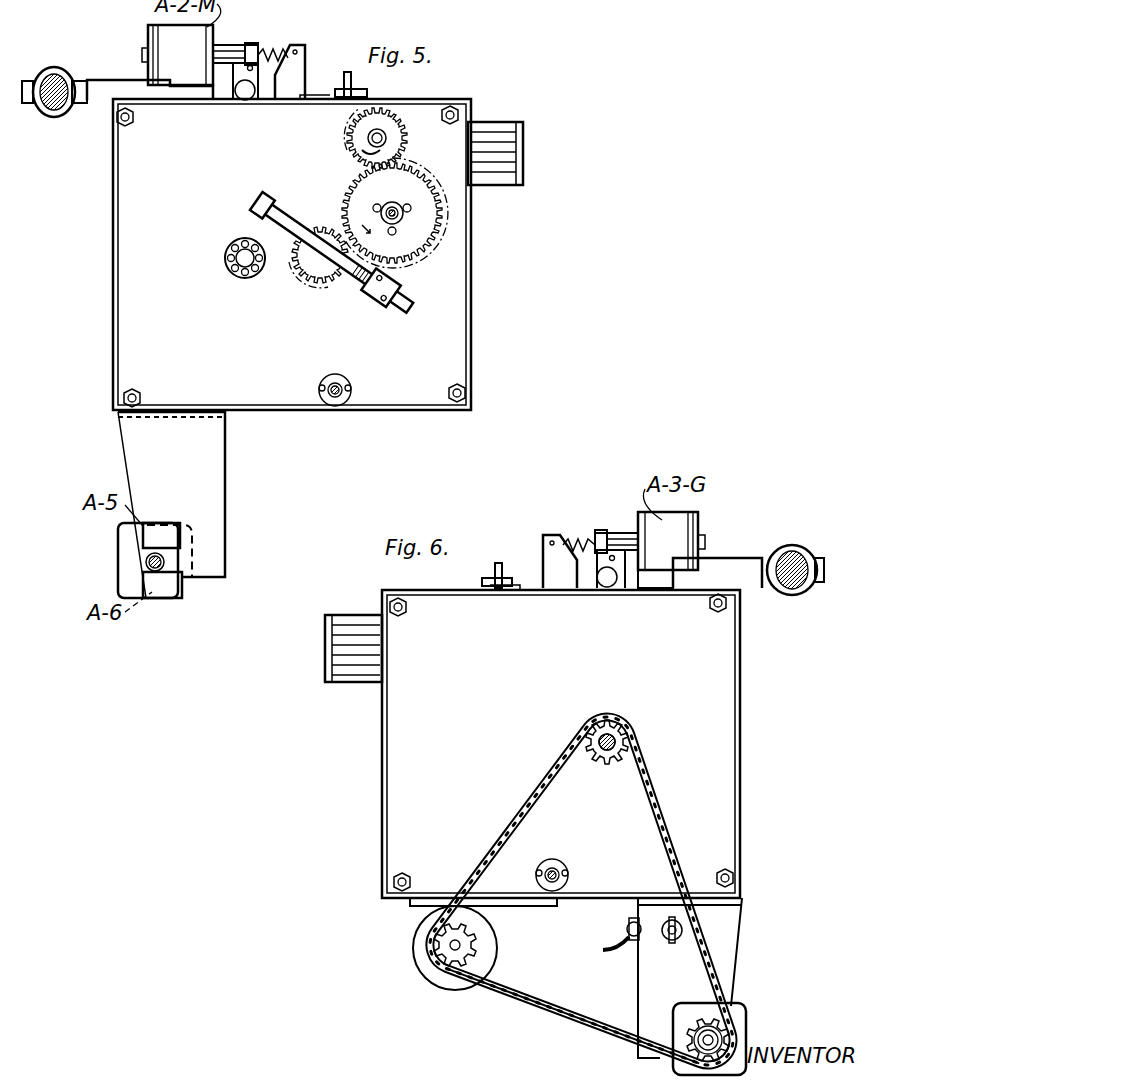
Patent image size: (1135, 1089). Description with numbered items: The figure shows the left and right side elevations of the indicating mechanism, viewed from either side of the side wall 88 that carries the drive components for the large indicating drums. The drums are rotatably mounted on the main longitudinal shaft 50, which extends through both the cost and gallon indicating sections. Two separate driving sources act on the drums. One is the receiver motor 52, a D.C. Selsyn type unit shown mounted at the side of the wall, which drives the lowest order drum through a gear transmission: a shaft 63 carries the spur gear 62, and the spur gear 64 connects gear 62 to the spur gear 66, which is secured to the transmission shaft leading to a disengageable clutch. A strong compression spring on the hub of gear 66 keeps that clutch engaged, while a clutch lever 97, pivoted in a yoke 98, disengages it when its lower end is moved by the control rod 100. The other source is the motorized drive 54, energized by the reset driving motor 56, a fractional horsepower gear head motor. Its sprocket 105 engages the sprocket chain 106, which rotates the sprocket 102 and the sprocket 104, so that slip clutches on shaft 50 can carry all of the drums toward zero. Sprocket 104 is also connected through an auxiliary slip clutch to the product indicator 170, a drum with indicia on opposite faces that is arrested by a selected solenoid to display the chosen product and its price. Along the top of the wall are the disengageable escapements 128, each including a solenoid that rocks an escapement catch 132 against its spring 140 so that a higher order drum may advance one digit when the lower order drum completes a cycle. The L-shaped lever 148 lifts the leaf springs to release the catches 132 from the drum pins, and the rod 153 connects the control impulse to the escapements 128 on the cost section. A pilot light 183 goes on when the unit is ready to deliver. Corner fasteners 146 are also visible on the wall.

In FIG. 5, the main longitudinal shaft 50 is at (243, 276).
In FIG. 6, the main longitudinal shaft 50 is at (617, 740).
In FIG. 5, the receiver motor 52 is at (487, 148).
In FIG. 6, the receiver motor 52 is at (352, 664).
In FIG. 6, the motorized drive 54 is at (654, 773).
In FIG. 6, the reset driving motor 56 is at (445, 982).
In FIG. 5, the spur gear 62 is at (403, 152).
In FIG. 5, the shaft 63 is at (368, 140).
In FIG. 5, the spur gear 64 is at (410, 243).
In FIG. 5, the spur gear 66 is at (320, 284).
In FIG. 5, the side wall 88 is at (142, 242).
In FIG. 6, the side wall 88 is at (715, 731).
In FIG. 5, the clutch lever 97 is at (288, 226).
In FIG. 5, the yoke 98 is at (262, 205).
In FIG. 5, the control rod 100 is at (412, 309).
In FIG. 6, the sprocket 102 is at (595, 742).
In FIG. 6, the sprocket 104 is at (733, 1008).
In FIG. 6, the sprocket 105 is at (468, 942).
In FIG. 6, the sprocket chain 106 is at (586, 1028).
In FIG. 5, the disengageable escapement 128 is at (160, 40).
In FIG. 6, the disengageable escapement 128 is at (549, 541).
In FIG. 5, the escapement catch 132 is at (228, 102).
In FIG. 6, the escapement catch 132 is at (612, 590).
In FIG. 5, the spring 140 is at (290, 50).
In FIG. 6, the spring 140 is at (555, 538).
In FIG. 5, the nut / handle 146 is at (118, 114).
In FIG. 6, the nut / handle 146 is at (730, 607).
In FIG. 5, the L-shaped lever 148 is at (305, 101).
In FIG. 6, the L-shaped lever 148 is at (497, 592).
In FIG. 5, the rod 153 is at (362, 86).
In FIG. 6, the rod 153 is at (492, 582).
In FIG. 5, the product indicator 170 is at (116, 578).
In FIG. 6, the product indicator 170 is at (749, 1034).
In FIG. 6, the pilot light 183 is at (636, 926).